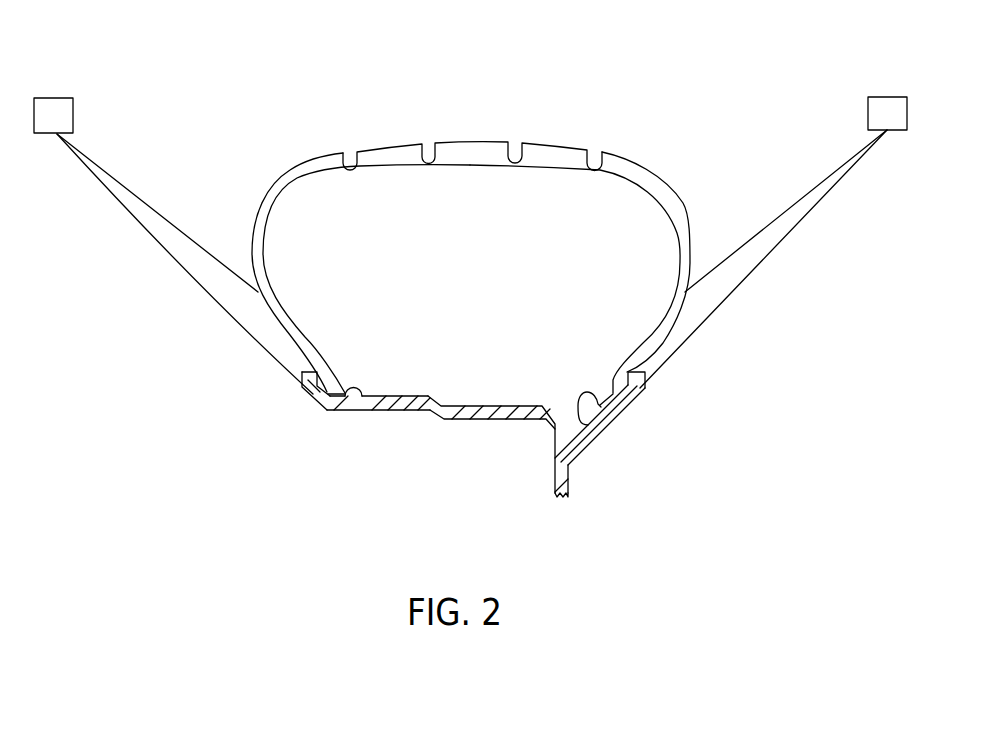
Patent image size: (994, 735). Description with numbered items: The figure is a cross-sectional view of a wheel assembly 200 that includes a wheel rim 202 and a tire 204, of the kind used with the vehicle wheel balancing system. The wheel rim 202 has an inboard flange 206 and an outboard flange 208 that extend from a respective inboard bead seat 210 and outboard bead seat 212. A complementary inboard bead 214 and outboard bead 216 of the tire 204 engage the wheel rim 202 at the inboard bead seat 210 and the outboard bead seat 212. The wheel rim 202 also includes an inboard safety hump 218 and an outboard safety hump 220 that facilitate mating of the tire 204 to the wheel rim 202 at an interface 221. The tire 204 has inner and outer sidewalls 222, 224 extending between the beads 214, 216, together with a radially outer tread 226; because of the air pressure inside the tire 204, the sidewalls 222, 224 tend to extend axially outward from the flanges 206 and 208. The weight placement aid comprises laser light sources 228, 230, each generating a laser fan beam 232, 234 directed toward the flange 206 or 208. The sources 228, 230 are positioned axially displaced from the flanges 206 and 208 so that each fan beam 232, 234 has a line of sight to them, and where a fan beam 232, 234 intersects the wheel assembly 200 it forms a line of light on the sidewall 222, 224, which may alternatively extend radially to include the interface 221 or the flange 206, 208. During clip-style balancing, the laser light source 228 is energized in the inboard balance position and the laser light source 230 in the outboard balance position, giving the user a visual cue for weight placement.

The wheel assembly 200 is at (246, 30).
The wheel rim 202 is at (507, 421).
The tire 204 is at (318, 163).
The inboard flange 206 is at (310, 393).
The outboard flange 208 is at (638, 390).
The inboard bead seat 210 is at (347, 392).
The outboard bead seat 212 is at (597, 394).
The inboard bead 214 is at (338, 390).
The outboard bead 216 is at (603, 407).
The inboard safety hump 218 is at (367, 394).
The outboard safety hump 220 is at (581, 391).
The interface 221 is at (315, 370).
The inner sidewall 222 is at (263, 253).
The outer sidewall 224 is at (680, 247).
The radially outer tread 226 is at (474, 152).
The laser light source 228 is at (53, 97).
The laser light source 230 is at (888, 97).
The laser fan beam 232 is at (152, 220).
The laser fan beam 234 is at (767, 240).